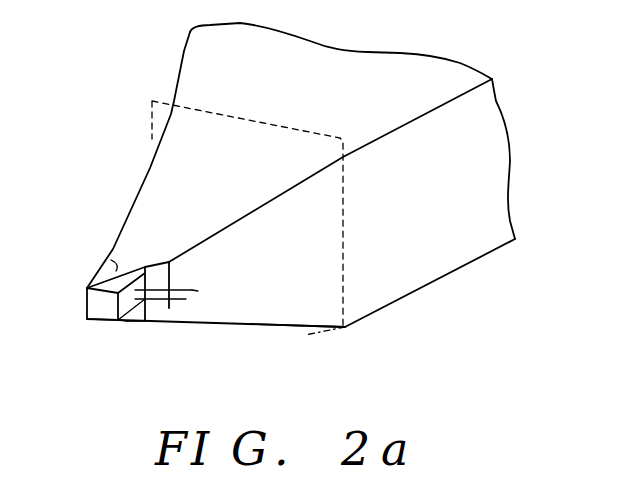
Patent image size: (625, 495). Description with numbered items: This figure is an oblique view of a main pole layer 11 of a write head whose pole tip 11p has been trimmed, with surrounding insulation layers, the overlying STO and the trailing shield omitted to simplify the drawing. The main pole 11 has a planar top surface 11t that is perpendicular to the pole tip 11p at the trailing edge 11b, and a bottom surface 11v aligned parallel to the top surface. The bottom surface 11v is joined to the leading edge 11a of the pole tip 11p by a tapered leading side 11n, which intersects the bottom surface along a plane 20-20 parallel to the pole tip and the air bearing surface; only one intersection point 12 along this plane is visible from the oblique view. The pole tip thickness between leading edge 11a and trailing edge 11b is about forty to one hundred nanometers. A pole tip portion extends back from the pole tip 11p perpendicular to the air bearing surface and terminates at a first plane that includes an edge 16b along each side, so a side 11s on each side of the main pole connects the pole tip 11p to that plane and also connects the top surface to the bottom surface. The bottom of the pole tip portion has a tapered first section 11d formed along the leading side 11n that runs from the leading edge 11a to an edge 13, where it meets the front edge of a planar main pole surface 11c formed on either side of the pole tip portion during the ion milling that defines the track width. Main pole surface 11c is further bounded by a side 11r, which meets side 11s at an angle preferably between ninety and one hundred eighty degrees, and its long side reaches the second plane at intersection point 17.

The main pole layer 11 is at (404, 265).
The planar top surface 11t is at (193, 54).
The bottom surface 11v is at (464, 253).
The side 11r is at (141, 259).
The side 11s is at (78, 274).
The trailing edge 11b is at (78, 293).
The pole tip 11p is at (85, 299).
The leading edge 11a is at (91, 318).
The main pole surface 11c is at (131, 315).
The first section 11d is at (113, 314).
The tapered leading side 11n is at (278, 320).
The intersection point 12 is at (339, 319).
The edge 13 is at (121, 316).
The edge 16b is at (184, 282).
The intersection point 17 is at (162, 269).
The plane 20 is at (258, 232).